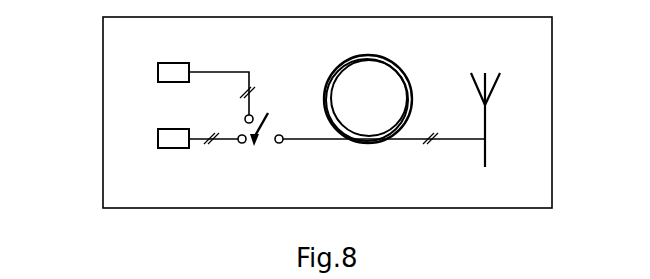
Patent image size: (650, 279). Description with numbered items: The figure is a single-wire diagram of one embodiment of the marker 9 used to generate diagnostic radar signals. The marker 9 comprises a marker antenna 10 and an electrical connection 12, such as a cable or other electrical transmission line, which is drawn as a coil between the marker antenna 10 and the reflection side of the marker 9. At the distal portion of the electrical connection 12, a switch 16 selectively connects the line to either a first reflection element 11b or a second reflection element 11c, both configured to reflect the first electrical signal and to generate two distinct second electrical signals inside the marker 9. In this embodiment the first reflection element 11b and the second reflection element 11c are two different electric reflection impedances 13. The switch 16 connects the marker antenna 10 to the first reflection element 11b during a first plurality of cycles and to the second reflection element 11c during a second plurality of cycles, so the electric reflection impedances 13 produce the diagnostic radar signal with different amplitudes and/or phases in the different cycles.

The marker 9 is at (102, 190).
The marker antenna 10 is at (487, 125).
The first reflection element 11b is at (140, 67).
The second reflection element 11c is at (128, 142).
The electrical connection 12 is at (400, 68).
The electric reflection impedances 13 is at (157, 76).
The switch 16 is at (276, 103).